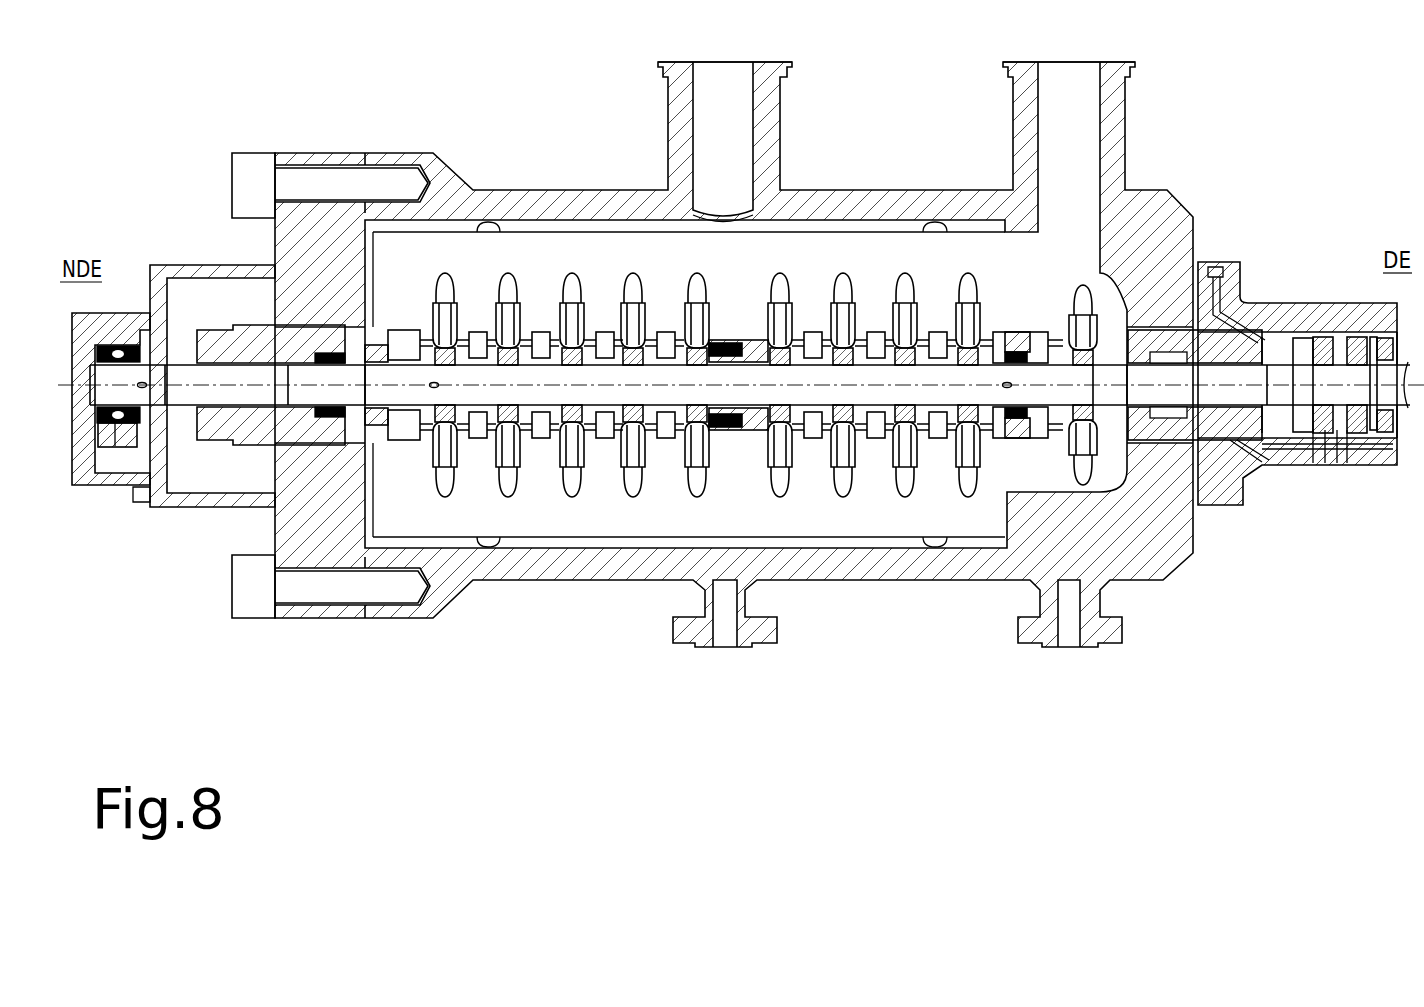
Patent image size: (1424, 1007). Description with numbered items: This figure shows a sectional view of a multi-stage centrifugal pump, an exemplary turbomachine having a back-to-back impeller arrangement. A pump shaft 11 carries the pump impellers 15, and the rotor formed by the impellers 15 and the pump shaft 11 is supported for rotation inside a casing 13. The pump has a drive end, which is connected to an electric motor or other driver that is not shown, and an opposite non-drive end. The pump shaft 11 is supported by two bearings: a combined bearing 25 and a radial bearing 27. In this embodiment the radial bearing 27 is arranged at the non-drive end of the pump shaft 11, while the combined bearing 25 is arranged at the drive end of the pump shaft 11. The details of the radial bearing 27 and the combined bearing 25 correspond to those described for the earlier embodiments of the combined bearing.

The pump shaft 11 is at (1232, 377).
The casing 13 is at (890, 205).
The pump impellers 15 is at (589, 300).
The combined bearing 25 is at (1354, 322).
The radial bearing 27 is at (116, 300).